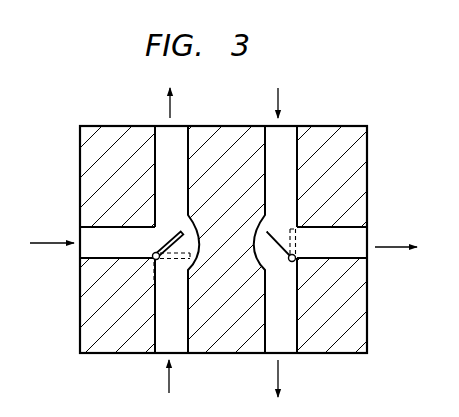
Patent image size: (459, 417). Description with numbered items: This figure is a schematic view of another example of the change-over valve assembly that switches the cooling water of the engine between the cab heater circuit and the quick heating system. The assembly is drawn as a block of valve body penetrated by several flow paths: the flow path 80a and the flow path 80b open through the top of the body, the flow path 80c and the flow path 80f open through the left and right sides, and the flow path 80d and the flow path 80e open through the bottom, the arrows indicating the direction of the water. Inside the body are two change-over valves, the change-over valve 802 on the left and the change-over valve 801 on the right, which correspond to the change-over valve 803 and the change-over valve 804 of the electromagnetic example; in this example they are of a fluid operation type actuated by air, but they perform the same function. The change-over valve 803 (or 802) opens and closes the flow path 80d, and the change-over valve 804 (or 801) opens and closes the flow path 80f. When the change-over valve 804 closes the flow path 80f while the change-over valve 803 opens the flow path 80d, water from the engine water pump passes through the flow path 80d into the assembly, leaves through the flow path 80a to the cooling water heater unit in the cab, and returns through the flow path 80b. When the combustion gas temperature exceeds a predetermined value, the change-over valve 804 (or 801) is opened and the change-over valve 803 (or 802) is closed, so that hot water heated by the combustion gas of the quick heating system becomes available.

The flow path 80a is at (180, 127).
The flow path 80b is at (287, 127).
The flow path 80c is at (80, 258).
The flow path 80d is at (160, 353).
The flow path 80e is at (288, 353).
The flow path 80f is at (368, 258).
The change-over valve 801 is at (349, 219).
The change-over valve 802 is at (106, 229).
The change-over valve 803 is at (168, 238).
The change-over valve 804 is at (270, 233).